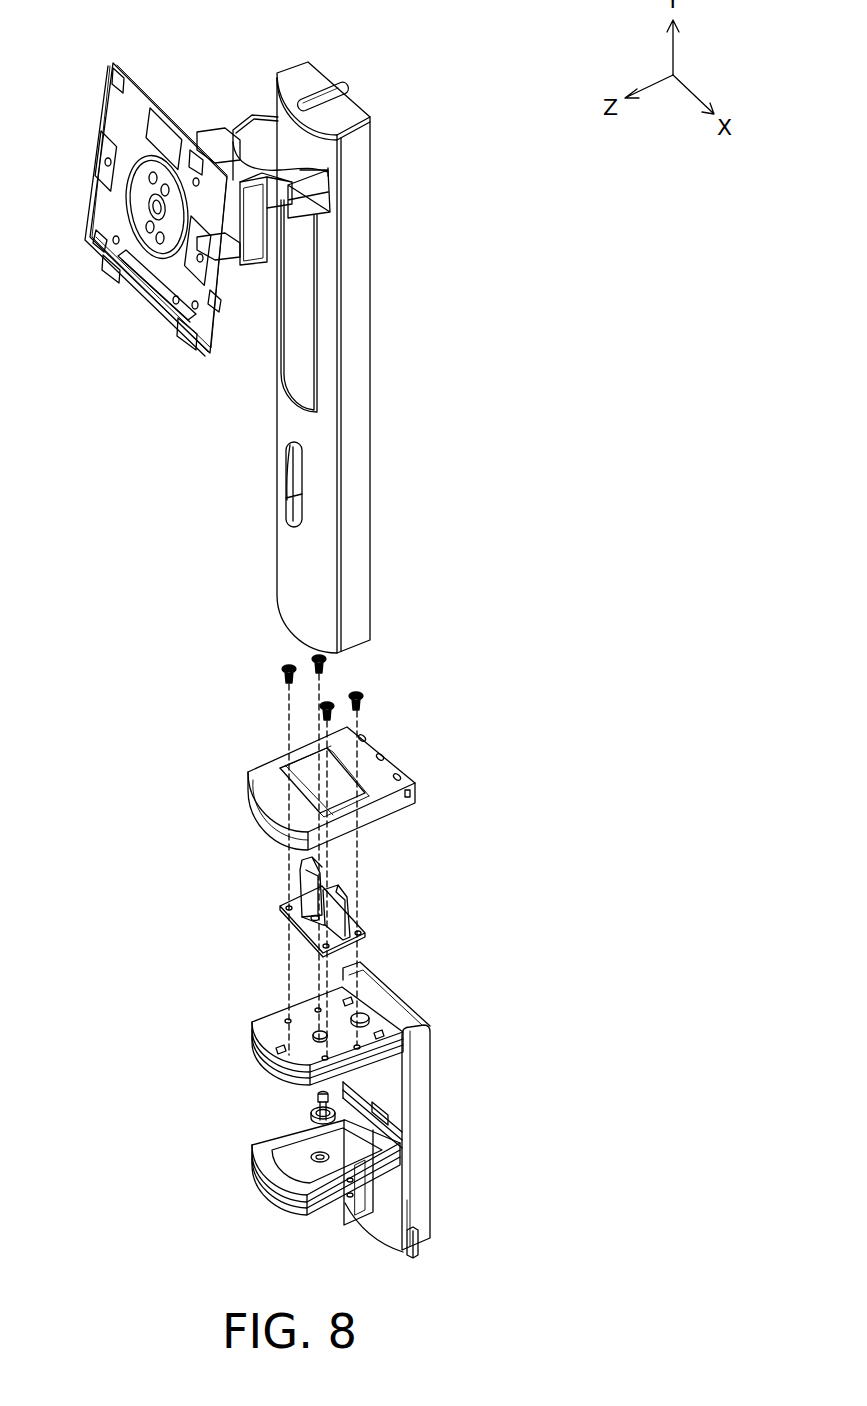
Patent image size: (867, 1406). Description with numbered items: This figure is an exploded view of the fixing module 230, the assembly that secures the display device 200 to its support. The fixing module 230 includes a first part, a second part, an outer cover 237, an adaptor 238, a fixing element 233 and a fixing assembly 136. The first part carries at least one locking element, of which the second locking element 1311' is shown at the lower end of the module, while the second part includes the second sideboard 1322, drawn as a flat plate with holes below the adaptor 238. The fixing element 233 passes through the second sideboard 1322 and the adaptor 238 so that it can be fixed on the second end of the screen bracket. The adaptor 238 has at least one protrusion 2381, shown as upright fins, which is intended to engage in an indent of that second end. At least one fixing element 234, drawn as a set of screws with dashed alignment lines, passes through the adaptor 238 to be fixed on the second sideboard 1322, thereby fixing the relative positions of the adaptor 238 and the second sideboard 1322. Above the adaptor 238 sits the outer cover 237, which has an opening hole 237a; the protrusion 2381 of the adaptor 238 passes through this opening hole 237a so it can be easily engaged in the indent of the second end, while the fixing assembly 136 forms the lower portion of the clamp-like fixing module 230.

The display support device 200 is at (366, 57).
The fixing element 234 is at (359, 694).
The outer cover 237 is at (270, 785).
The opening hole 237a is at (312, 794).
The adaptor 238 is at (290, 918).
The protrusion 2381 is at (335, 908).
The fixing module 230 is at (457, 942).
The second sideboard 1322 is at (275, 1023).
The fixing element 233 is at (309, 1112).
The fixing assembly 136 is at (333, 1208).
The second locking element 1311' is at (454, 1238).